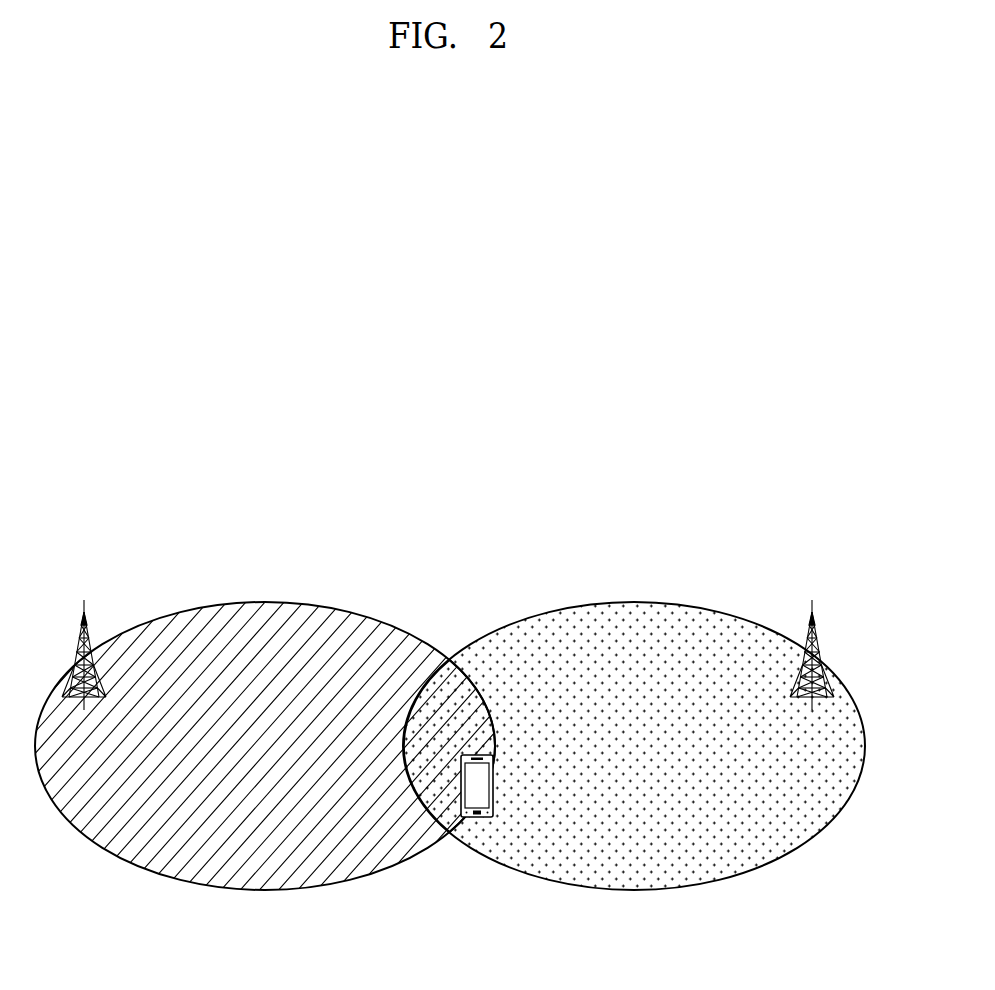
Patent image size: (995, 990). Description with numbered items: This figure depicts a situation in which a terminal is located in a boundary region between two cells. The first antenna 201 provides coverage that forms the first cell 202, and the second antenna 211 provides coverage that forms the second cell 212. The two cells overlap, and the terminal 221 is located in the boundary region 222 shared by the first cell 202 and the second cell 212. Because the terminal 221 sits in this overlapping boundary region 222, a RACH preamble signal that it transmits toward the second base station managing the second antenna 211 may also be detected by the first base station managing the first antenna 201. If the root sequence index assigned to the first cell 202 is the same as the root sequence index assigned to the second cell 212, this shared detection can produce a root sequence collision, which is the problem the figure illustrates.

The first antenna 201 is at (75, 646).
The first cell 202 is at (262, 602).
The second antenna 211 is at (823, 648).
The second cell 212 is at (630, 601).
The terminal 221 is at (487, 790).
The boundary region 222 is at (441, 707).